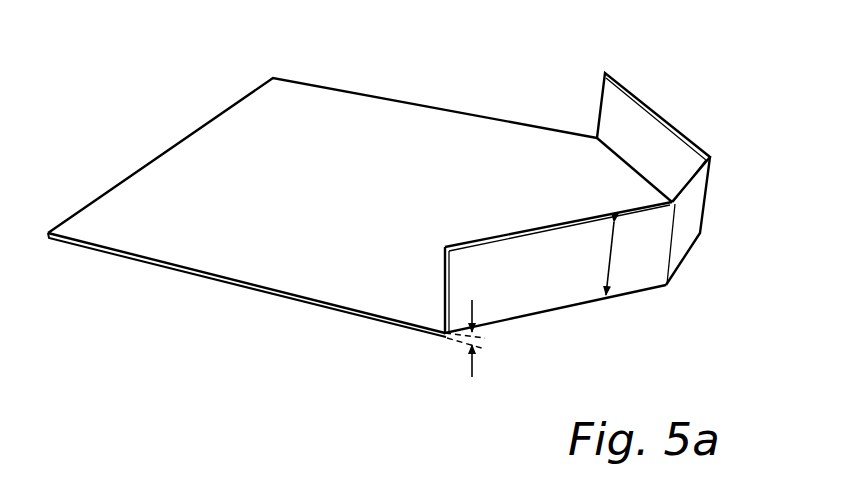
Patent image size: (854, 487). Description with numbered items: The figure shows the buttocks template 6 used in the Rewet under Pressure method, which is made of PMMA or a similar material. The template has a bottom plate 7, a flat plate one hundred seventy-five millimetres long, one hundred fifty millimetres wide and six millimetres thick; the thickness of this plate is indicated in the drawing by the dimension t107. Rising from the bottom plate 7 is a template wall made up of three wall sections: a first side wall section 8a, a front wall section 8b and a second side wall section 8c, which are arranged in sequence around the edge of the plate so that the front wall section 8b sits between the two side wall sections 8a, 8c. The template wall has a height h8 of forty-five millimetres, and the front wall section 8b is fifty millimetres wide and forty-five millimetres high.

The buttocks template 6 is at (518, 81).
The bottom plate 7 is at (347, 263).
The first side wall section 8a is at (640, 273).
The front wall section 8b is at (693, 220).
The second side wall section 8c is at (665, 120).
The height of the template wall h8 is at (592, 258).
The plate thickness t107 is at (478, 340).